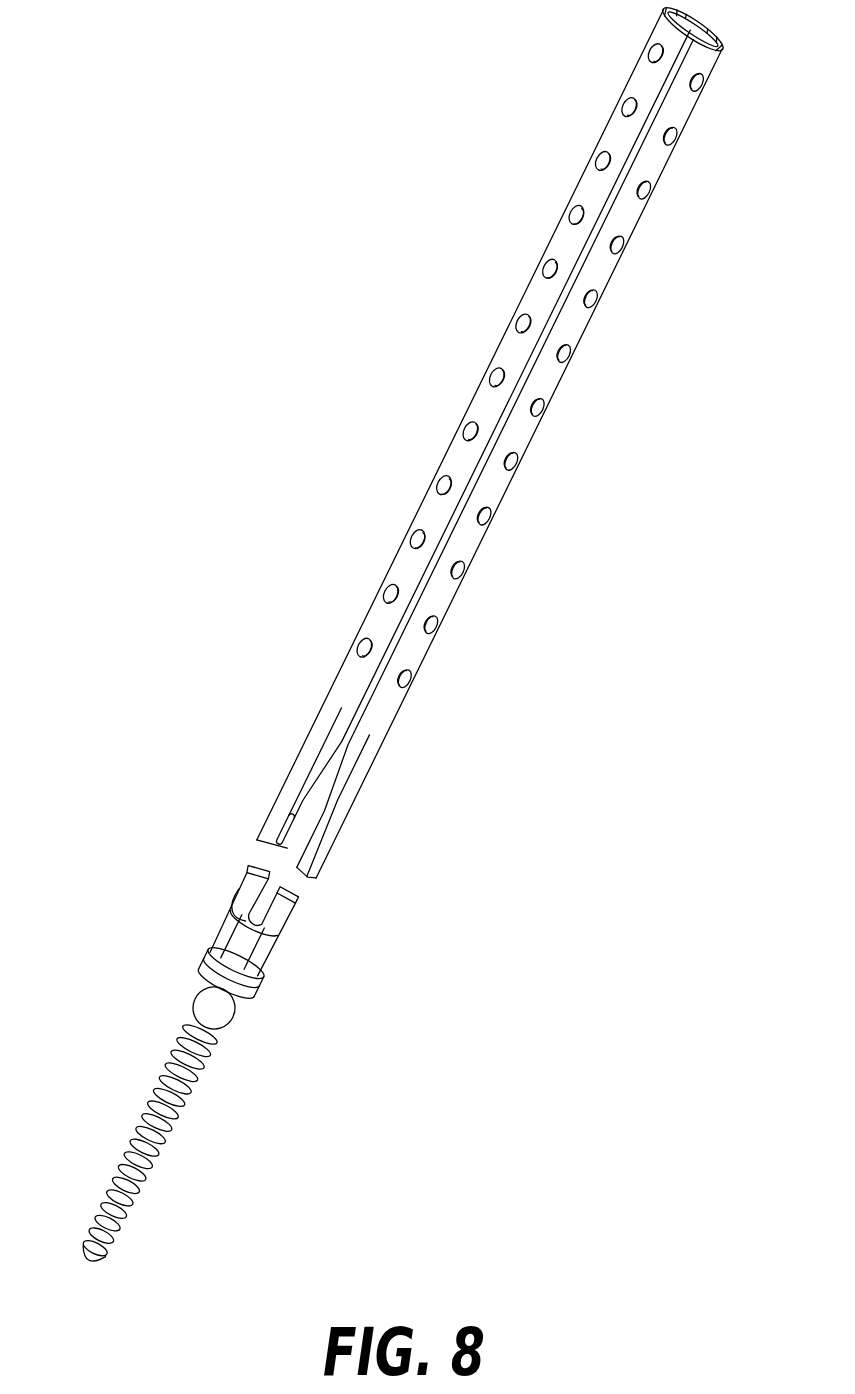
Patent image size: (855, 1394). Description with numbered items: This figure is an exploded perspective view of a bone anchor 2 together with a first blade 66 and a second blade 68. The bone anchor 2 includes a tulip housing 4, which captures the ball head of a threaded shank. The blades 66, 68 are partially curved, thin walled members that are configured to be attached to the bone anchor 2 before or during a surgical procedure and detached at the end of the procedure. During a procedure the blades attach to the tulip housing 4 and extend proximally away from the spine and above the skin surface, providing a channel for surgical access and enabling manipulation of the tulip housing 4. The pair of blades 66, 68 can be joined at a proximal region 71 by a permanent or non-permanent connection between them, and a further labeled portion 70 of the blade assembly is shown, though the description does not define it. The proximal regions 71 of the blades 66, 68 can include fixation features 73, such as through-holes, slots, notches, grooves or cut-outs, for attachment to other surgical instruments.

The bone anchor 2 is at (138, 968).
The tulip housing 4 is at (322, 921).
The first blade 66 is at (572, 142).
The second blade 68 is at (662, 220).
The inner member 70 is at (245, 778).
The proximal region 71 is at (465, 196).
The fixation features 73 is at (545, 411).